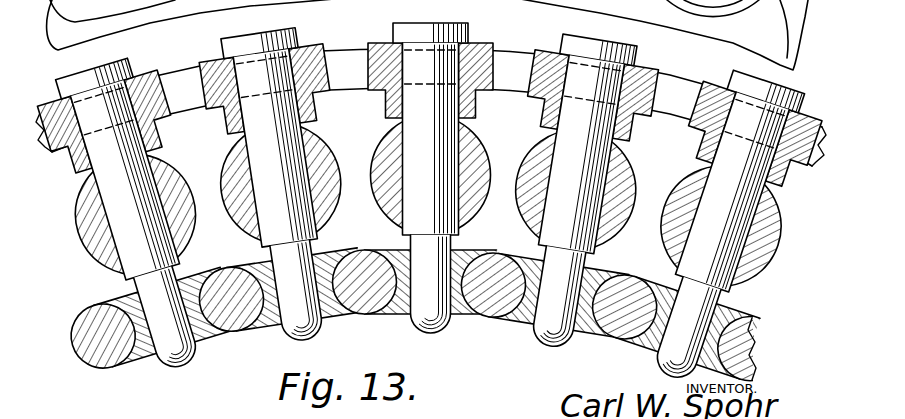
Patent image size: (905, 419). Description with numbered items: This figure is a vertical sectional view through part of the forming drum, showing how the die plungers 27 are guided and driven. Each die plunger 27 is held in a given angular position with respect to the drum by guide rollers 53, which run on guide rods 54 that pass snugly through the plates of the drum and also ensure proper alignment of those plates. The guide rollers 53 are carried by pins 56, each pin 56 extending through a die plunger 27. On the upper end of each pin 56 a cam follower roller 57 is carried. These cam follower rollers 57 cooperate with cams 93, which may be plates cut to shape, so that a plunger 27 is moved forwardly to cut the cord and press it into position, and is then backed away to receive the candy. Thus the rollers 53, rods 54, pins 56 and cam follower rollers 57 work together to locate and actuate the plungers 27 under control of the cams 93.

The die plunger 27 is at (383, 148).
The guide roller 53 is at (393, 312).
The guide rod 54 is at (238, 316).
The pin 56 is at (262, 152).
The cam follower roller 57 is at (378, 42).
The cam 93 is at (507, 62).